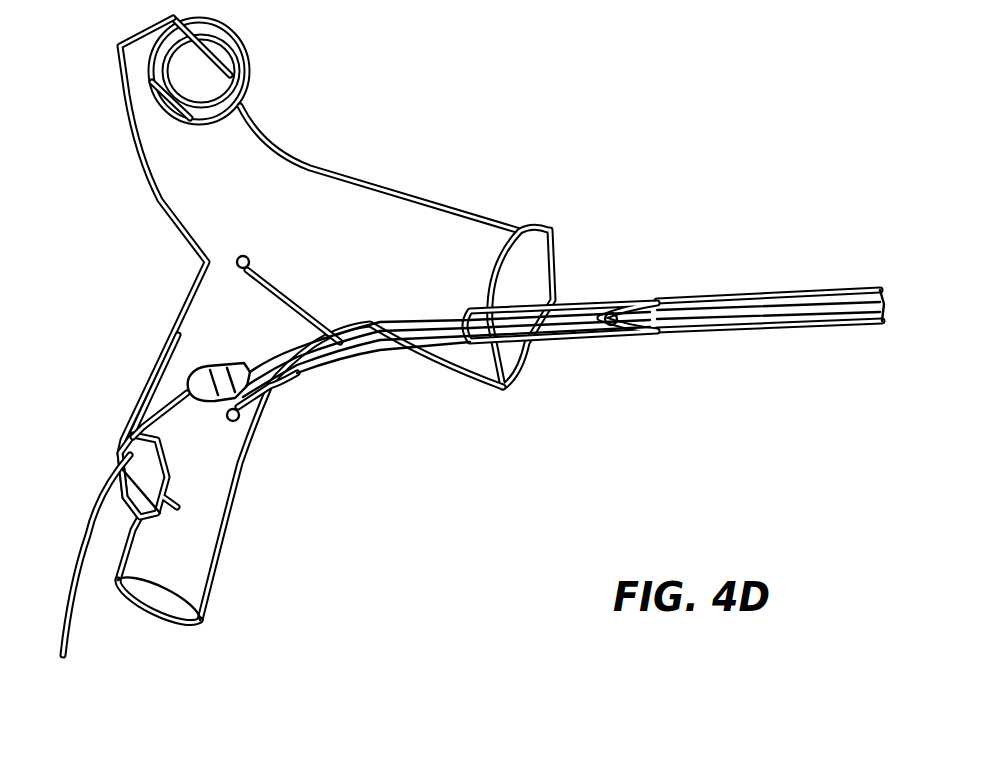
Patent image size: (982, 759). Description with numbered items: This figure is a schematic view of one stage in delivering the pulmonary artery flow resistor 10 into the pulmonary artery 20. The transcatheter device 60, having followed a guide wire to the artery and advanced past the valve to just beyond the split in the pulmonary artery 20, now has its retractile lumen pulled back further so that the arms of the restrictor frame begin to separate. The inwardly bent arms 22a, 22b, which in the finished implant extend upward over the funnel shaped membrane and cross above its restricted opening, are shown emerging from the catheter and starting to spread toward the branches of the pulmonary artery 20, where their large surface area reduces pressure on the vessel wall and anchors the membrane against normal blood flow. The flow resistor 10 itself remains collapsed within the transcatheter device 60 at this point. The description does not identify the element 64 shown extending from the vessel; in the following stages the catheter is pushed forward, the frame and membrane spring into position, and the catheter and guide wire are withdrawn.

The pulmonary artery 20 is at (385, 190).
The inwardly bent arm 22a is at (279, 288).
The inwardly bent arm 22b is at (247, 402).
The pulmonary artery flow resistor 10 is at (625, 298).
The transcatheter device 60 is at (653, 300).
The tether wire 64 is at (83, 527).